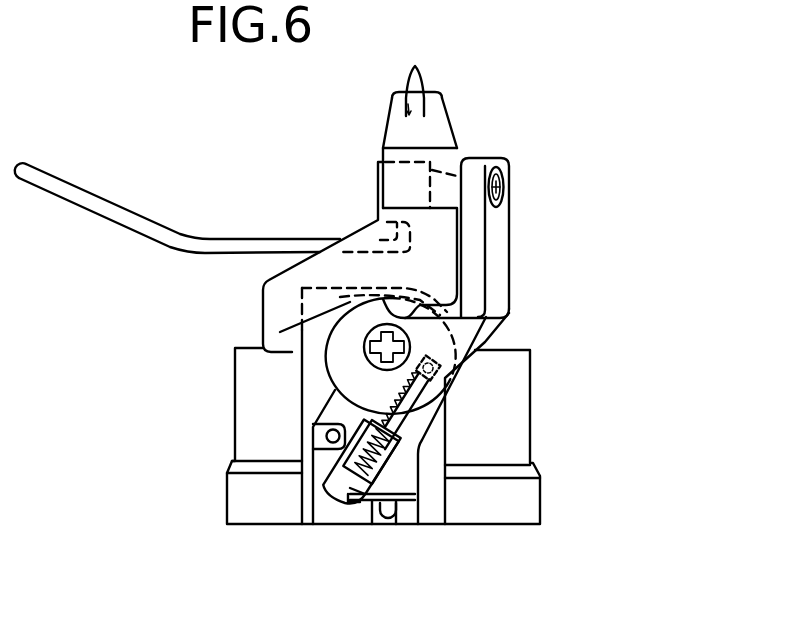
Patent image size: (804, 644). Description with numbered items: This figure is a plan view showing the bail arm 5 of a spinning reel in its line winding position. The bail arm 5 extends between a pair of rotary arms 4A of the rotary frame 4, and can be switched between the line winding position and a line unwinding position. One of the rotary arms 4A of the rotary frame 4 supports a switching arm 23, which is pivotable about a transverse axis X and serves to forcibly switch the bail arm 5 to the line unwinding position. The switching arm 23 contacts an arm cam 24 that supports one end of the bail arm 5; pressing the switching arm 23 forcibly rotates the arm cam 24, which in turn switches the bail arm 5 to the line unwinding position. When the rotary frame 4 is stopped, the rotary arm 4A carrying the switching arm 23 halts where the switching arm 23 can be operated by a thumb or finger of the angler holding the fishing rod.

The bail arm 5 is at (118, 205).
The switching arm 23 is at (445, 133).
The arm cam 24 is at (507, 248).
The rotary frame 4 is at (532, 378).
The rotary arm 4A is at (438, 437).
The transverse axis X is at (283, 312).